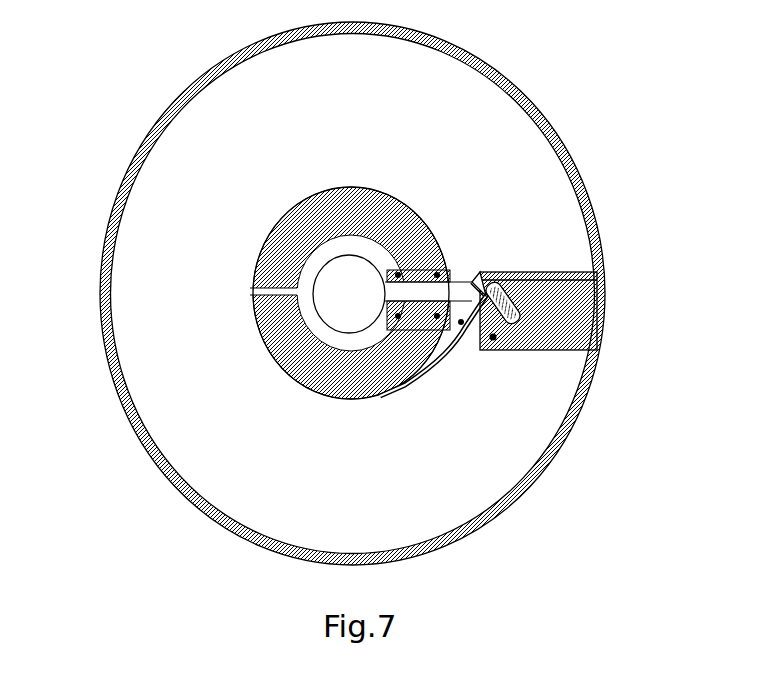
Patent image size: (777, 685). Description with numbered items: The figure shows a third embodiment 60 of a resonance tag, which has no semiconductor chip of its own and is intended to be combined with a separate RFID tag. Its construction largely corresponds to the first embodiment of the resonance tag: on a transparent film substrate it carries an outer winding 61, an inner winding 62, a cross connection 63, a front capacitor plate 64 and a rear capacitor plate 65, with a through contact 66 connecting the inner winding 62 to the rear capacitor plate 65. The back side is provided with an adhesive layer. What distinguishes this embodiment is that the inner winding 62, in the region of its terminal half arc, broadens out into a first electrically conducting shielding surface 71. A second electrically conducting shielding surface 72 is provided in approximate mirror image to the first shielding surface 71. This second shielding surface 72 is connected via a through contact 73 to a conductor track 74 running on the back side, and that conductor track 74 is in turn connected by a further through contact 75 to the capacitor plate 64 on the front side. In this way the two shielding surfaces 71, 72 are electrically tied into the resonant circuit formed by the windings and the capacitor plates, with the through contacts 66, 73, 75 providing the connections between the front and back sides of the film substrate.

The third embodiment of a resonance tag 60 is at (86, 160).
The outer winding 61 is at (540, 115).
The inner winding 62 is at (320, 398).
The cross connection 63 is at (522, 273).
The front capacitor plate 64 is at (552, 352).
The rear capacitor plate 65 is at (502, 273).
The through contact 66 is at (441, 268).
The first electrically conducting shielding surface 71 is at (307, 203).
The second electrically conducting shielding surface 72 is at (278, 362).
The through contact 73 is at (422, 362).
The conductor track 74 is at (468, 335).
The further through contact 75 is at (493, 345).